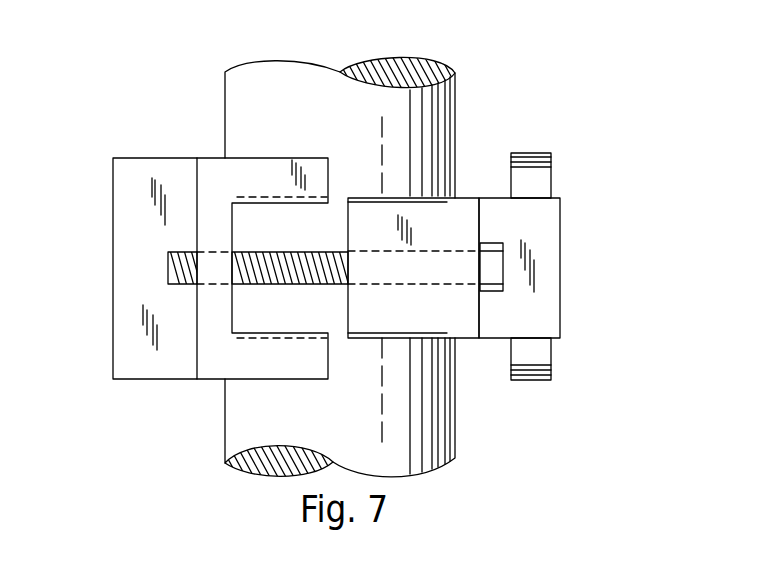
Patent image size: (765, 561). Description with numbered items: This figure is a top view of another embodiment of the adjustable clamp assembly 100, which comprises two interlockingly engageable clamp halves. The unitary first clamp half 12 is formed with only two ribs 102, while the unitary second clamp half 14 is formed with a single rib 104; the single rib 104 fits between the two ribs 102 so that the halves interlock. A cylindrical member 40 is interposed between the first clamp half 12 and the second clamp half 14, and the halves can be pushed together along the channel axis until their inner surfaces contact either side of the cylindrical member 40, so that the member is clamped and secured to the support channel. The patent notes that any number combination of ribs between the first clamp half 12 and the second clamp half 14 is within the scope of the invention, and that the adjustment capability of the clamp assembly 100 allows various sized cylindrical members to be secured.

The clamp assembly 100 is at (483, 96).
The first clamp half 12 is at (192, 274).
The ribs 102 is at (255, 172).
The cylindrical member 40 is at (312, 116).
The rib 104 is at (441, 317).
The second clamp half 14 is at (553, 267).